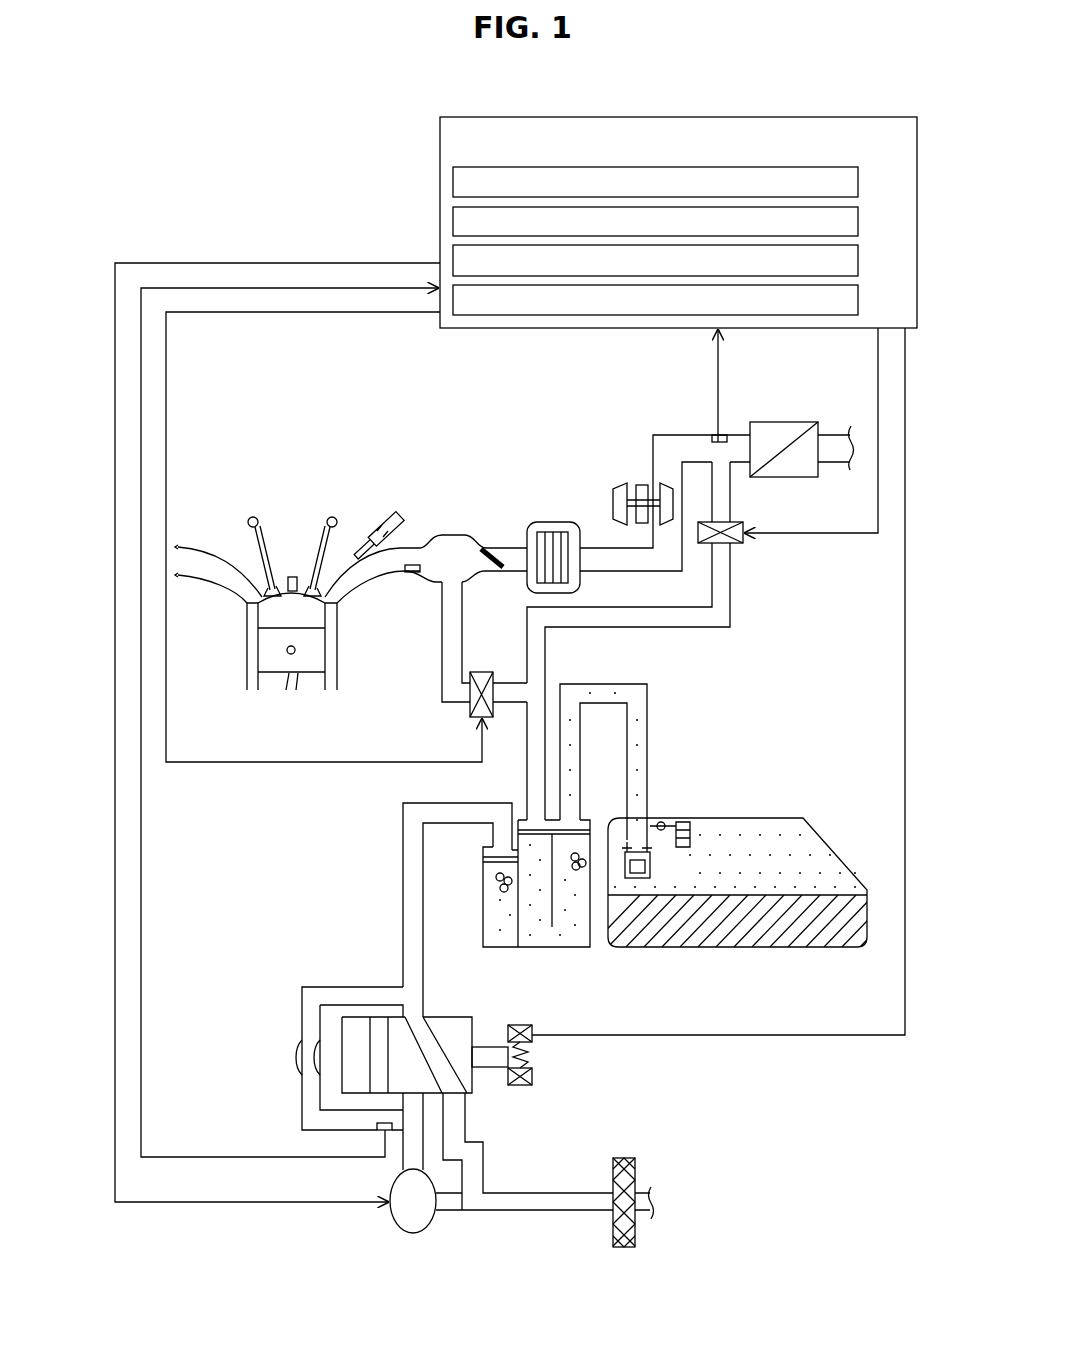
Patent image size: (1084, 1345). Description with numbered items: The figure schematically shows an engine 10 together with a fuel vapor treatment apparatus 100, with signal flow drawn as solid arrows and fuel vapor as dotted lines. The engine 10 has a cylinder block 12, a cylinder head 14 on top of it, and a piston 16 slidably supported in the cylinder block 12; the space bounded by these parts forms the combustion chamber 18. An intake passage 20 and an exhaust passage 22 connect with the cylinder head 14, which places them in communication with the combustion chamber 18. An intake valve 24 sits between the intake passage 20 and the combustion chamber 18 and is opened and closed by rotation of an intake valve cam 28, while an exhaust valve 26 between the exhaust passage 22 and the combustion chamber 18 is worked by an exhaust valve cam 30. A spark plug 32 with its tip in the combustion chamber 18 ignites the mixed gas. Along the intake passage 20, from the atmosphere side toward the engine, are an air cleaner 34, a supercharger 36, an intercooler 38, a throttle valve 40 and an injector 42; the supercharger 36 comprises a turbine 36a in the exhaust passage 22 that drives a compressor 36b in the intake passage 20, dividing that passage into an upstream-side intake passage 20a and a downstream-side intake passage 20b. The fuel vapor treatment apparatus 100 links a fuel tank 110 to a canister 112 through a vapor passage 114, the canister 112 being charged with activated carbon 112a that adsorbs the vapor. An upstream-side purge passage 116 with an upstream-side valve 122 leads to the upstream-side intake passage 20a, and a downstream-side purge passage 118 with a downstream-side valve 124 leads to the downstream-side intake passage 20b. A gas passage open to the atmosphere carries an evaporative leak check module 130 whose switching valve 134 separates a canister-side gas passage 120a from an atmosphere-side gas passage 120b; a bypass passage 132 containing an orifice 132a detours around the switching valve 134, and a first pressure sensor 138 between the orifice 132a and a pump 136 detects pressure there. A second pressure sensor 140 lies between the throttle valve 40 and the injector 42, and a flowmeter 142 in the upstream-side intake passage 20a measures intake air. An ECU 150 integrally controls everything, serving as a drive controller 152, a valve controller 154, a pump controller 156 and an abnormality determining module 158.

The engine 10 is at (195, 483).
The cylinder block 12 is at (247, 650).
The cylinder head 14 is at (229, 597).
The piston 16 is at (312, 674).
The combustion chamber 18 is at (304, 622).
The intake passage 20 is at (360, 586).
The upstream-side intake passage 20a is at (693, 433).
The downstream-side intake passage 20b is at (412, 546).
The exhaust passage 22 is at (215, 544).
The intake valve 24 is at (334, 540).
The exhaust valve 26 is at (257, 541).
The intake valve cam 28 is at (333, 517).
The exhaust valve cam 30 is at (253, 517).
The spark plug 32 is at (298, 578).
The air cleaner 34 is at (782, 422).
The supercharger 36 is at (602, 474).
The turbine 36a is at (611, 504).
The compressor 36b is at (667, 483).
The intercooler 38 is at (540, 522).
The throttle valve 40 is at (483, 535).
The injector 42 is at (381, 508).
The fuel vapor treatment apparatus 100 is at (839, 67).
The fuel tank 110 is at (752, 818).
The canister 112 is at (483, 925).
The activated carbon 112a is at (496, 876).
The vapor passage 114 is at (647, 716).
The upstream-side purge passage 116 is at (734, 623).
The downstream-side purge passage 118 is at (462, 610).
The canister-side gas passage 120a is at (403, 835).
The atmosphere-side gas passage 120b is at (508, 1193).
The upstream-side valve 122 is at (740, 545).
The downstream-side valve 124 is at (471, 706).
The evaporative leak check module 130 is at (294, 915).
The bypass passage 132 is at (302, 998).
The orifice 132a is at (302, 1058).
The switching valve 134 is at (470, 1093).
The pump 136 is at (413, 1163).
The first pressure sensor 138 is at (375, 1127).
The second pressure sensor 140 is at (413, 574).
The flowmeter 142 is at (722, 435).
The ECU 150 is at (440, 122).
The drive controller 152 is at (860, 182).
The valve controller 154 is at (860, 221).
The pump controller 156 is at (860, 260).
The abnormality determining module 158 is at (860, 300).